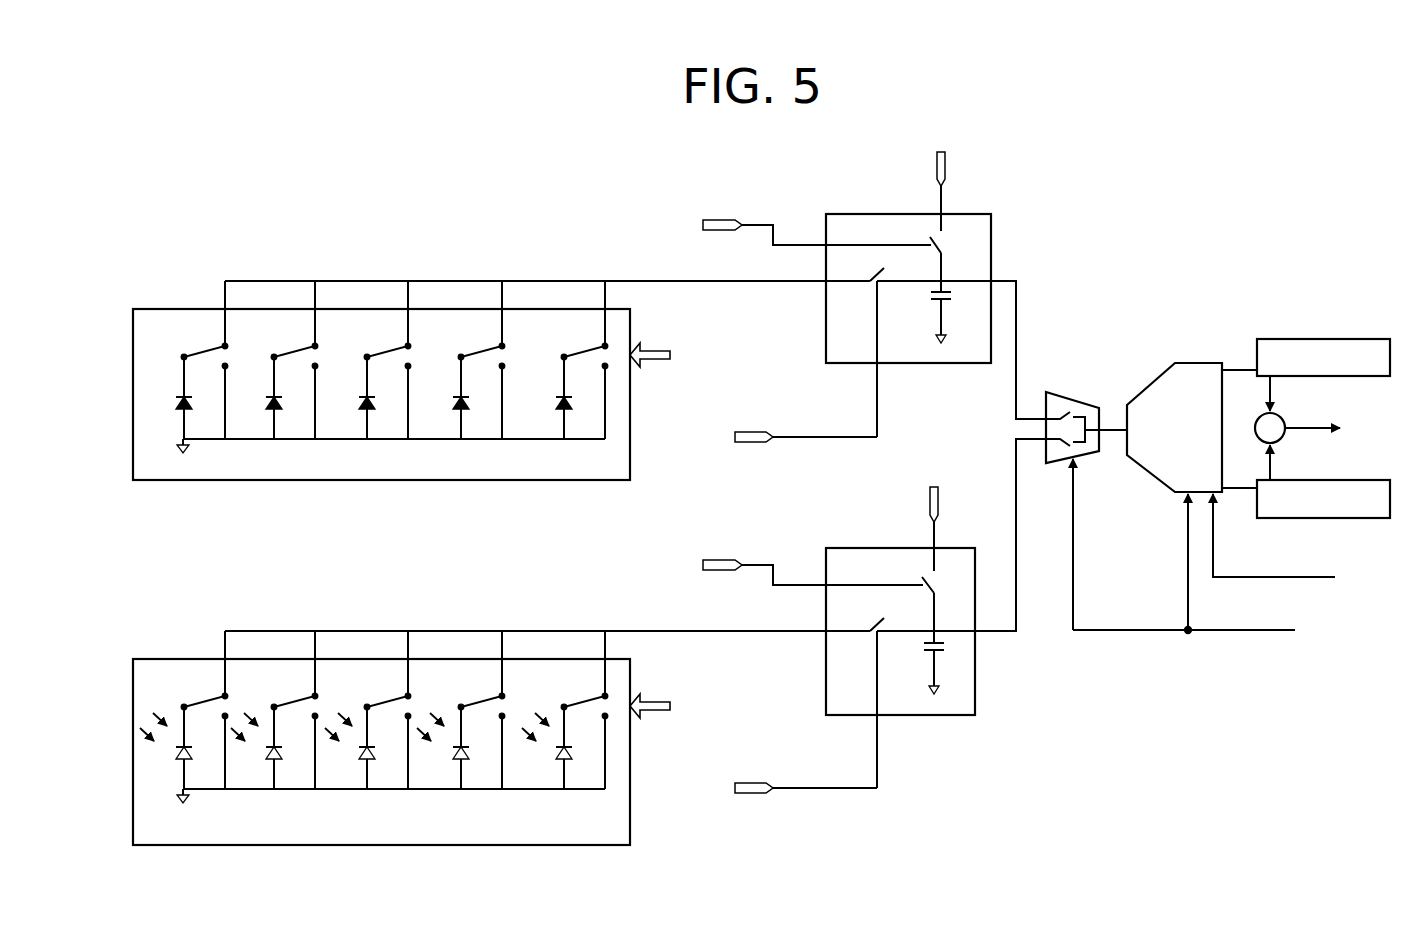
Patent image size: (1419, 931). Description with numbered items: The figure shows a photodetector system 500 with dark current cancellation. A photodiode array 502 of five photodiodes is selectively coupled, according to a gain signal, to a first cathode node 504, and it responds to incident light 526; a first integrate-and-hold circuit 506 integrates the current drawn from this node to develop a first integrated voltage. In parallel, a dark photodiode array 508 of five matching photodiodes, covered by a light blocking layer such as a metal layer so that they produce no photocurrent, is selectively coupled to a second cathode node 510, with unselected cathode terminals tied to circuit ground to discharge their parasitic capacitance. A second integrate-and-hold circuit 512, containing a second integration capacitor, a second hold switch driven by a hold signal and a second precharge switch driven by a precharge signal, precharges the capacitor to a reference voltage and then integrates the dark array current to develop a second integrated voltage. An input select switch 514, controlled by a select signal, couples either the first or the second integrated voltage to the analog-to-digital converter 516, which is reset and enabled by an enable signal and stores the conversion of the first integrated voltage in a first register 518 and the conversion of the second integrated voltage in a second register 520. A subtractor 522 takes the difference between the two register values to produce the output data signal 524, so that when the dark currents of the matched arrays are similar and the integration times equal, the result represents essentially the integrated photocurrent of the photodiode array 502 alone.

The photodetector system 500 is at (1003, 808).
The photodiode array 502 is at (193, 659).
The first cathode node 504 is at (620, 631).
The first integrate-and-hold circuit 506 is at (893, 548).
The dark photodiode array 508 is at (193, 309).
The second cathode node 510 is at (620, 281).
The second integrate-and-hold circuit 512 is at (893, 214).
The input select switch 514 is at (1057, 392).
The analog-to-digital converter 516 is at (1200, 363).
The first register 518 is at (1365, 518).
The second register 520 is at (1345, 339).
The subtractor 522 is at (1283, 418).
The output data signal 524 is at (1368, 440).
The incident light 526 is at (148, 752).